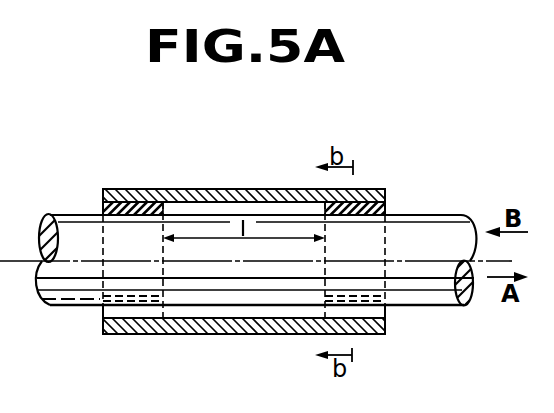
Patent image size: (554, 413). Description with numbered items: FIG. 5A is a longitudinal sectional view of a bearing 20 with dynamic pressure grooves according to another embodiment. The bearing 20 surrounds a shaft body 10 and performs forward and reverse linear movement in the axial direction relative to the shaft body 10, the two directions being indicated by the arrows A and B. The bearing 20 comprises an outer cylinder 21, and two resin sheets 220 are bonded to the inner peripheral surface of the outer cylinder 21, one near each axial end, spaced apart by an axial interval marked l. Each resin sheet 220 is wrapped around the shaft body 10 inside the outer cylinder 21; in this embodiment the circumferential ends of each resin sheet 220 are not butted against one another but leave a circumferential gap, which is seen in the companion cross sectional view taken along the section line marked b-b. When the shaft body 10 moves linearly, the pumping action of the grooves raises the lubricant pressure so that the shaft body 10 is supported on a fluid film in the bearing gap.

The shaft body 10 is at (456, 218).
The bearing with dynamic pressure grooves 20 is at (185, 190).
The outer cylinder 21 is at (262, 189).
The resin sheet 220 is at (103, 203).